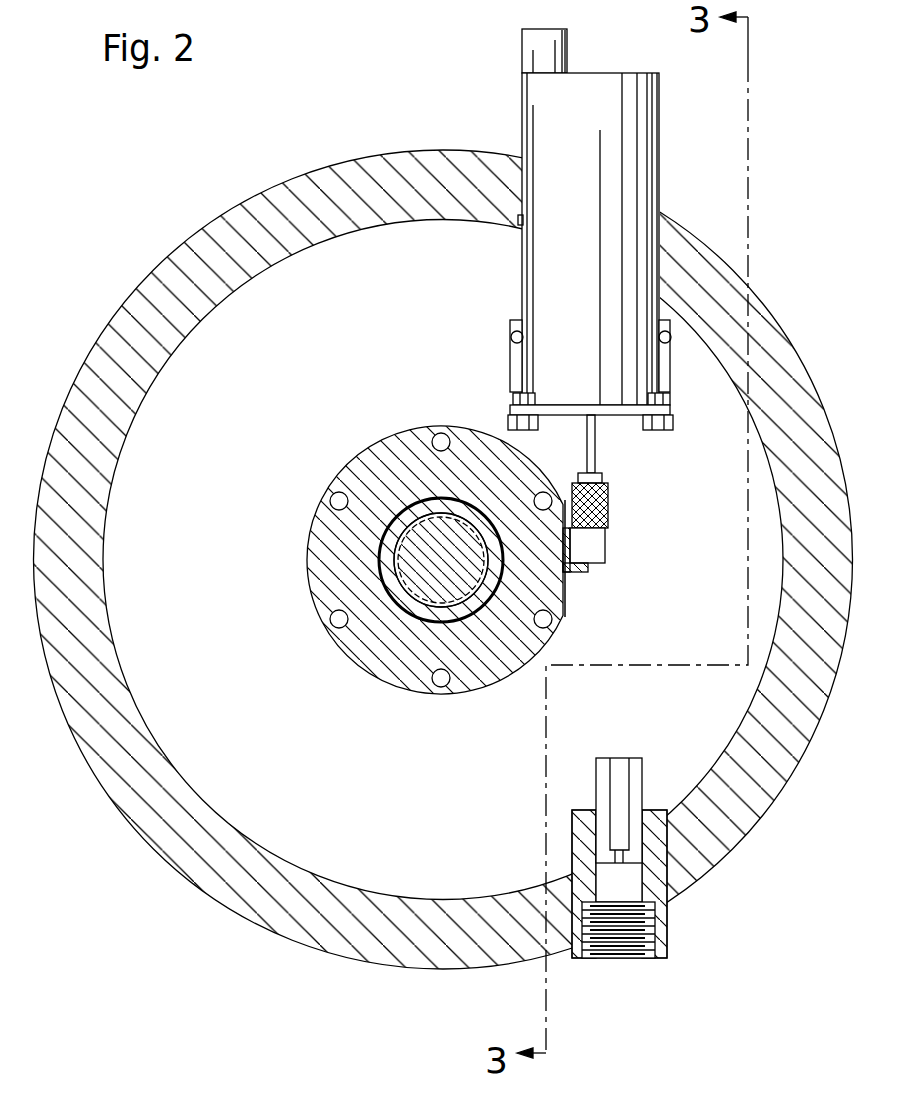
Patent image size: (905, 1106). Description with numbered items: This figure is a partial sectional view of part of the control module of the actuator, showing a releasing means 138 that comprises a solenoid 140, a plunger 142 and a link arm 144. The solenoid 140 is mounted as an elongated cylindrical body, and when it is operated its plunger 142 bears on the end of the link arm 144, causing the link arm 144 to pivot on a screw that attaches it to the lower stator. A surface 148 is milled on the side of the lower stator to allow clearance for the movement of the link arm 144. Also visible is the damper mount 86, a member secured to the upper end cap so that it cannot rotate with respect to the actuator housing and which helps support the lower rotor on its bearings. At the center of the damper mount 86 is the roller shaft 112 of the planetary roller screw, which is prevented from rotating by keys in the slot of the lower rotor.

The damper mount 86 is at (413, 695).
The roller shaft 112 is at (432, 578).
The releasing means 138 is at (478, 362).
The solenoid 140 is at (522, 112).
The plunger 142 is at (610, 503).
The link arm 144 is at (580, 572).
The surface 148 is at (567, 603).